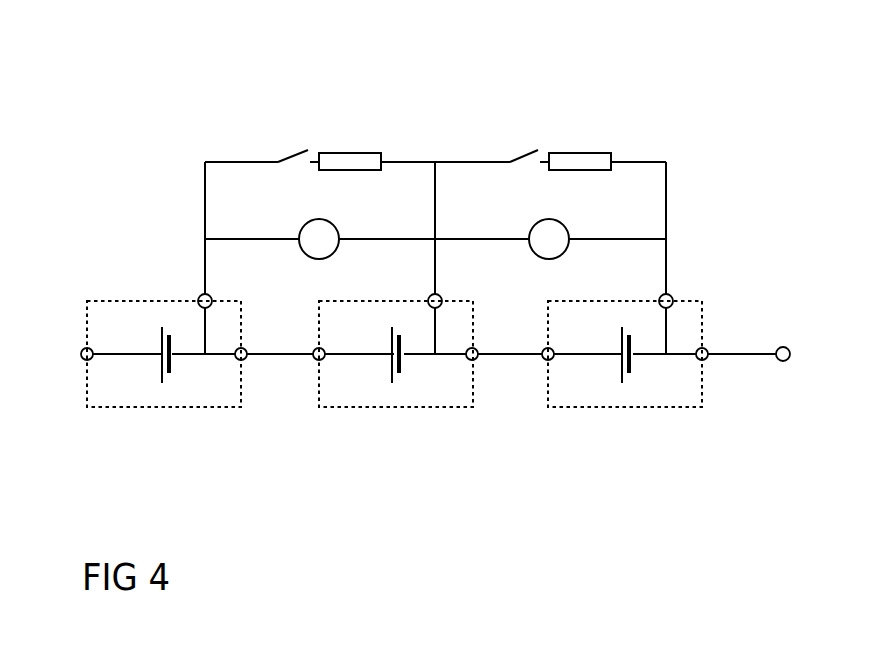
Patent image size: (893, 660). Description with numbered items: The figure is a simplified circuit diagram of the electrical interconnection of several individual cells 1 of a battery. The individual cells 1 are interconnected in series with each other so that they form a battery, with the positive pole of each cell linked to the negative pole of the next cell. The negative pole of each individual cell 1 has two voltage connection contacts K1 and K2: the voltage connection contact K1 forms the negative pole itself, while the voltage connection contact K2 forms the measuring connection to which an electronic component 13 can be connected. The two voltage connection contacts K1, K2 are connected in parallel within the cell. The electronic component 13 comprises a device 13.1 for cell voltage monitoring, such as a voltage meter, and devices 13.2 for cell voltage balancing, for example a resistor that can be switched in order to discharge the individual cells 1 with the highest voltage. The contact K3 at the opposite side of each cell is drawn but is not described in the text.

The individual cell 1 is at (167, 408).
The electronic component 13 is at (145, 158).
The device for cell voltage monitoring 13.1 is at (332, 232).
The device for cell voltage balancing 13.2 is at (353, 154).
The voltage connection contact K1 is at (241, 360).
The voltage connection contact K2 is at (429, 299).
The third contact (negative terminal) K3 is at (87, 360).